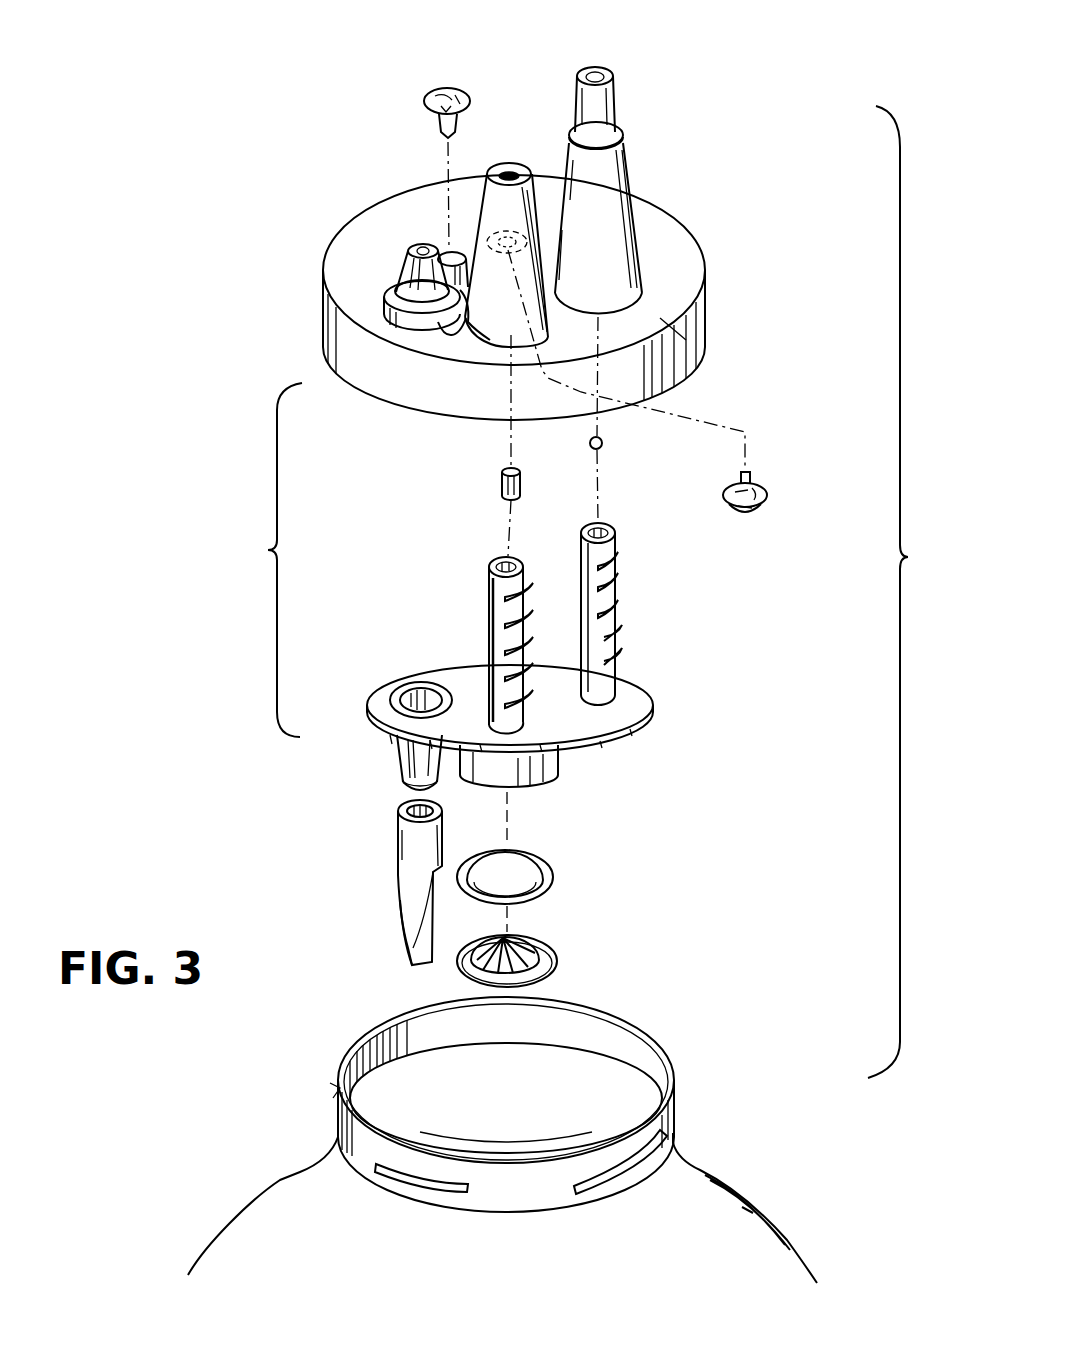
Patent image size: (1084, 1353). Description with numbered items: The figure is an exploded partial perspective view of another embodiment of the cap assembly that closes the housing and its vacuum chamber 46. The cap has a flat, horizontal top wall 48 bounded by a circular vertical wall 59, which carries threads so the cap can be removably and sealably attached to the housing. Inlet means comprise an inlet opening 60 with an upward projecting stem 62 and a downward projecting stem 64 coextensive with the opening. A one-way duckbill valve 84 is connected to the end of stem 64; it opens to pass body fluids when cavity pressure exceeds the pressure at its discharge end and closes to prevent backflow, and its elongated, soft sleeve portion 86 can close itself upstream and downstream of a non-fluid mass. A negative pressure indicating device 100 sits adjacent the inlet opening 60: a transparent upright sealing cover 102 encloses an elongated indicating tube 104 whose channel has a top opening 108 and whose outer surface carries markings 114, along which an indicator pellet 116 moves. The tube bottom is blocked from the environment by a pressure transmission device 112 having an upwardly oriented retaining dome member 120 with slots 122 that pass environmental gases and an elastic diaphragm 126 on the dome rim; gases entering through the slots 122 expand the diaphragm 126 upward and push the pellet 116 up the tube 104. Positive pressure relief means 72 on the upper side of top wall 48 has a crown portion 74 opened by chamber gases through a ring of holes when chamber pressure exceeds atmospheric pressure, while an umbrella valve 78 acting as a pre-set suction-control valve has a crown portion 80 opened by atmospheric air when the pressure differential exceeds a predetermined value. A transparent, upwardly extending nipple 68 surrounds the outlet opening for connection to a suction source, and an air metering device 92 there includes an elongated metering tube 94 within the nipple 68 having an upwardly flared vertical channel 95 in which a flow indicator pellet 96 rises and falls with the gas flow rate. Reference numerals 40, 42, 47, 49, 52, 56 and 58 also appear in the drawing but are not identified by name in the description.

The cap assembly 40 is at (712, 210).
The dispensing closure assembly 42 is at (905, 592).
The vacuum chamber 46 is at (511, 1270).
The internal components 47 is at (272, 560).
The top wall 48 is at (705, 271).
The container shoulder seam 49 is at (748, 1232).
The cap skirt 52 is at (686, 340).
The container opening 56 is at (583, 1068).
The container neck ring 58 is at (678, 1138).
The circular vertical wall 59 is at (350, 343).
The inlet opening 60 is at (422, 693).
The upward projecting stem 62 is at (407, 253).
The downward projecting stem 64 is at (400, 773).
The nipple 68 is at (616, 186).
The positive pressure relief means 72 is at (421, 93).
The crown portion 74 is at (462, 88).
The umbrella valve 78 is at (772, 488).
The crown portion 80 is at (752, 514).
The duckbill valve 84 is at (380, 852).
The sleeve portion 86 is at (405, 929).
The air metering device 92 is at (638, 593).
The metering tube 94 is at (612, 567).
The vertical channel 95 is at (599, 523).
The flow indicator pellet 96 is at (603, 442).
The negative pressure indicating device 100 is at (478, 218).
The sealing cover 102 is at (519, 163).
The indicating tube 104 is at (498, 627).
The top opening 108 is at (513, 558).
The pressure transmission device 112 is at (567, 905).
The markings 114 is at (526, 626).
The indicator pellet 116 is at (501, 484).
The retaining dome member 120 is at (520, 943).
The slots 122 is at (540, 970).
The elastic diaphragm 126 is at (516, 863).